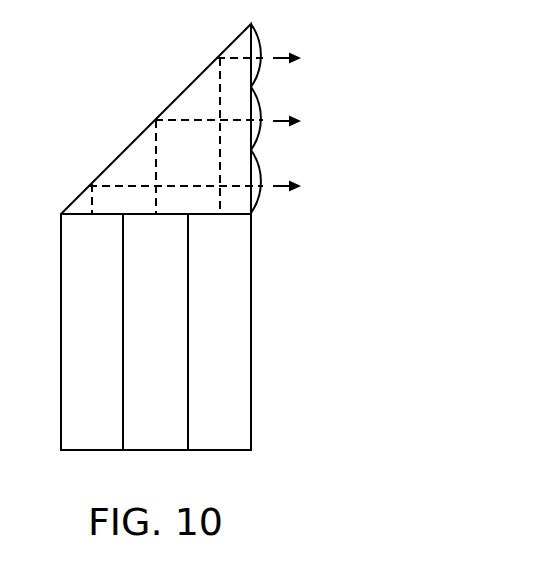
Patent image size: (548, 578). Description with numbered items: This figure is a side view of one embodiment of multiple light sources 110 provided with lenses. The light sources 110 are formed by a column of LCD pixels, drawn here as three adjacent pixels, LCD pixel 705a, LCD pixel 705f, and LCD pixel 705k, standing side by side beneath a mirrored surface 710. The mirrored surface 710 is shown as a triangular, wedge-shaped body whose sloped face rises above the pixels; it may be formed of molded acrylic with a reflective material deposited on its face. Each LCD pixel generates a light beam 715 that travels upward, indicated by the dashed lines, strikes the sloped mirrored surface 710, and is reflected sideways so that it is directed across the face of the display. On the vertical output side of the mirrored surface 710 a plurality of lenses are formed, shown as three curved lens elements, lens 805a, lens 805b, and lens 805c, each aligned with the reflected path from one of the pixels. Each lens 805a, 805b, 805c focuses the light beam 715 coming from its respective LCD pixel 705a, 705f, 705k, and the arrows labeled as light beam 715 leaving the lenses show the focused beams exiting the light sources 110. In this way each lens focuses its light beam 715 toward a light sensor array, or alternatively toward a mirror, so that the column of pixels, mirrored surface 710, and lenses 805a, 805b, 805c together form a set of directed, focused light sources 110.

The light source 110 is at (48, 55).
The mirrored surface 710 is at (132, 143).
The lens 805a is at (256, 45).
The lens 805b is at (256, 108).
The lens 805c is at (256, 170).
The light beam 715 is at (273, 58).
The LCD pixel 705a is at (92, 332).
The LCD pixel 705f is at (155, 332).
The LCD pixel 705k is at (219, 332).